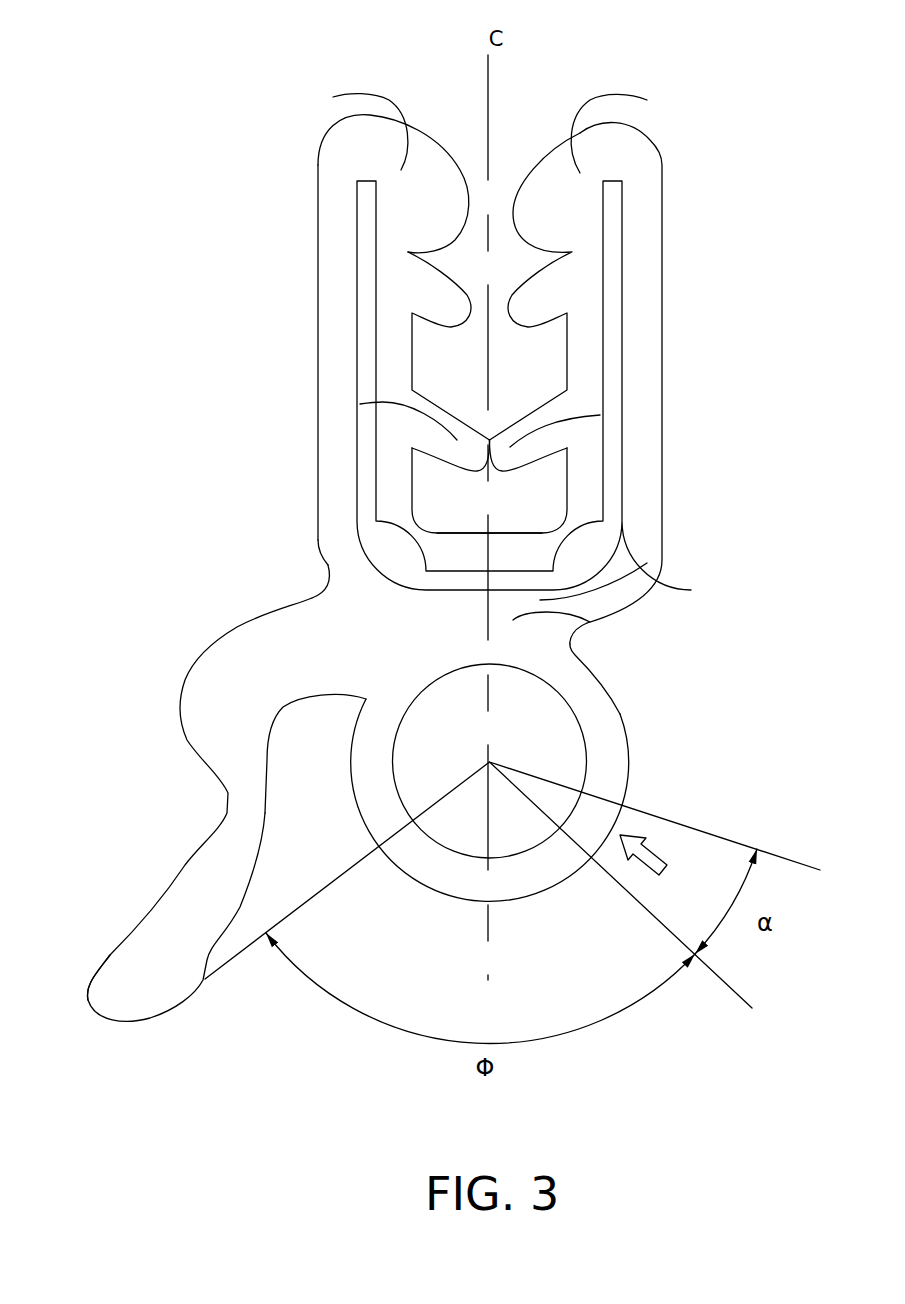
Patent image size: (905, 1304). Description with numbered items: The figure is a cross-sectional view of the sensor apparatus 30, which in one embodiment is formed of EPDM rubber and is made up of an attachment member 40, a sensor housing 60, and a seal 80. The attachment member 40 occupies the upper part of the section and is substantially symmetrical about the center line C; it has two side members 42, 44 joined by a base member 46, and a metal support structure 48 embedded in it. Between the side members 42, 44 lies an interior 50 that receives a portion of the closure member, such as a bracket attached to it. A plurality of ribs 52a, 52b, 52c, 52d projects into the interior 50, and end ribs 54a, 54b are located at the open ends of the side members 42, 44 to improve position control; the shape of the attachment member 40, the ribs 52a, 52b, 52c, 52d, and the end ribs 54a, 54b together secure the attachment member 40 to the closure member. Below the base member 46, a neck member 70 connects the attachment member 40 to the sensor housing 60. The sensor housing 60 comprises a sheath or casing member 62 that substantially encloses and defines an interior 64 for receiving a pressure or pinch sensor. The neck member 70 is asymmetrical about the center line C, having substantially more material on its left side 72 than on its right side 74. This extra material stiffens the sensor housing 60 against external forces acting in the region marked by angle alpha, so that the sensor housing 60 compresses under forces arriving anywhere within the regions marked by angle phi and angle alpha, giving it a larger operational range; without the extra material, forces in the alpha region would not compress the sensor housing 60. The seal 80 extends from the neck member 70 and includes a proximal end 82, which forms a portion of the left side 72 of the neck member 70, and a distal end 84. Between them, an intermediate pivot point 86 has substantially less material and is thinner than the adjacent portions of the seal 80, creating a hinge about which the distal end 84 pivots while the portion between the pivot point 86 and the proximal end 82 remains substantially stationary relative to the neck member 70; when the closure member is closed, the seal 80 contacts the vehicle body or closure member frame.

The sensor apparatus 30 is at (150, 113).
The attachment member 40 is at (670, 208).
The side member 42 is at (330, 193).
The side member 44 is at (647, 235).
The base member 46 is at (647, 563).
The metal support structure 48 is at (615, 348).
The interior 50 is at (512, 127).
The rib 52a is at (360, 404).
The rib 52b is at (600, 415).
The rib 52c is at (535, 297).
The rib 52d is at (448, 300).
The end rib 54a is at (333, 97).
The end rib 54b is at (647, 100).
The sensor housing 60 is at (630, 727).
The casing member 62 is at (602, 766).
The interior 64 is at (443, 767).
The neck member 70 is at (620, 615).
The left side 72 is at (393, 620).
The right side 74 is at (590, 620).
The seal 80 is at (133, 905).
The proximal end 82 is at (368, 650).
The distal end 84 is at (140, 997).
The intermediate pivot point 86 is at (250, 802).